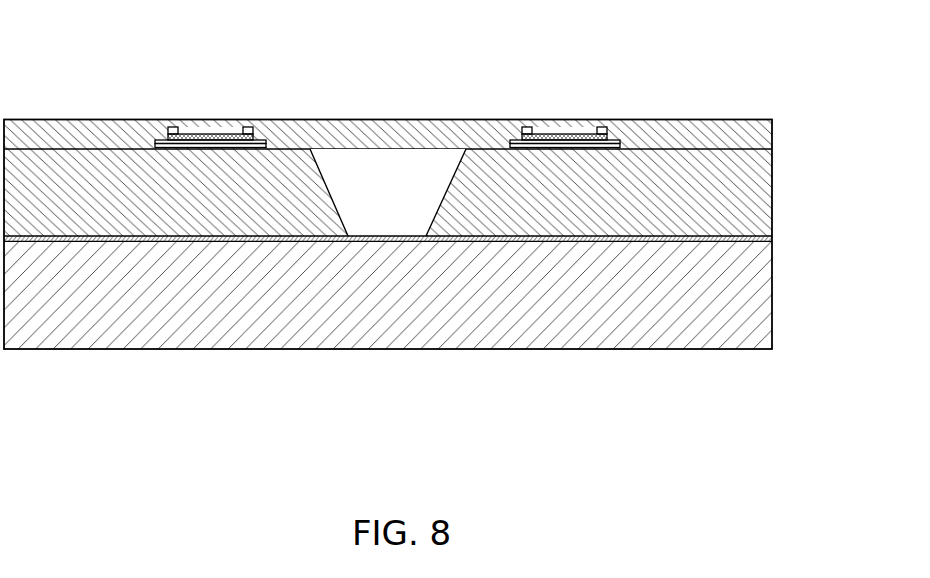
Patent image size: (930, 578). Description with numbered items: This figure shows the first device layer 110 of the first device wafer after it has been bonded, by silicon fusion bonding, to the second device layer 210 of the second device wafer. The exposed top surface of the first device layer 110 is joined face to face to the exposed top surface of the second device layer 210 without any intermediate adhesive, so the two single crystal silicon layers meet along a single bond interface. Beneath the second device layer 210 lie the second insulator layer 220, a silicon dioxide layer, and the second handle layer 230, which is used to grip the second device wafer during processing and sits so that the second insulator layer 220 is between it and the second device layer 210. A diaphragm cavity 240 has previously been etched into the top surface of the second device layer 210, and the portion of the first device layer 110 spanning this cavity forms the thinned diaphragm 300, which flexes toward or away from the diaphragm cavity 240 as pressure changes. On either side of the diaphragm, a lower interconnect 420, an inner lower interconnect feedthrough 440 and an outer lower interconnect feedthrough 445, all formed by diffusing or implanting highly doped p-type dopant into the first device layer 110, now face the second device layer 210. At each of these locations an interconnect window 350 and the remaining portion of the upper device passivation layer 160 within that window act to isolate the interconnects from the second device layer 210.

The first device layer 110 is at (772, 130).
The upper device passivation layer 160 is at (156, 141).
The second device layer 210 is at (425, 277).
The second insulator layer 220 is at (772, 232).
The second handle layer 230 is at (772, 293).
The diaphragm cavity 240 is at (398, 226).
The diaphragm 300 is at (358, 132).
The interconnect window 350 is at (152, 149).
The lower interconnect 420 is at (387, 207).
The inner lower interconnect feedthrough 440 is at (248, 128).
The outer lower interconnect feedthrough 445 is at (168, 126).